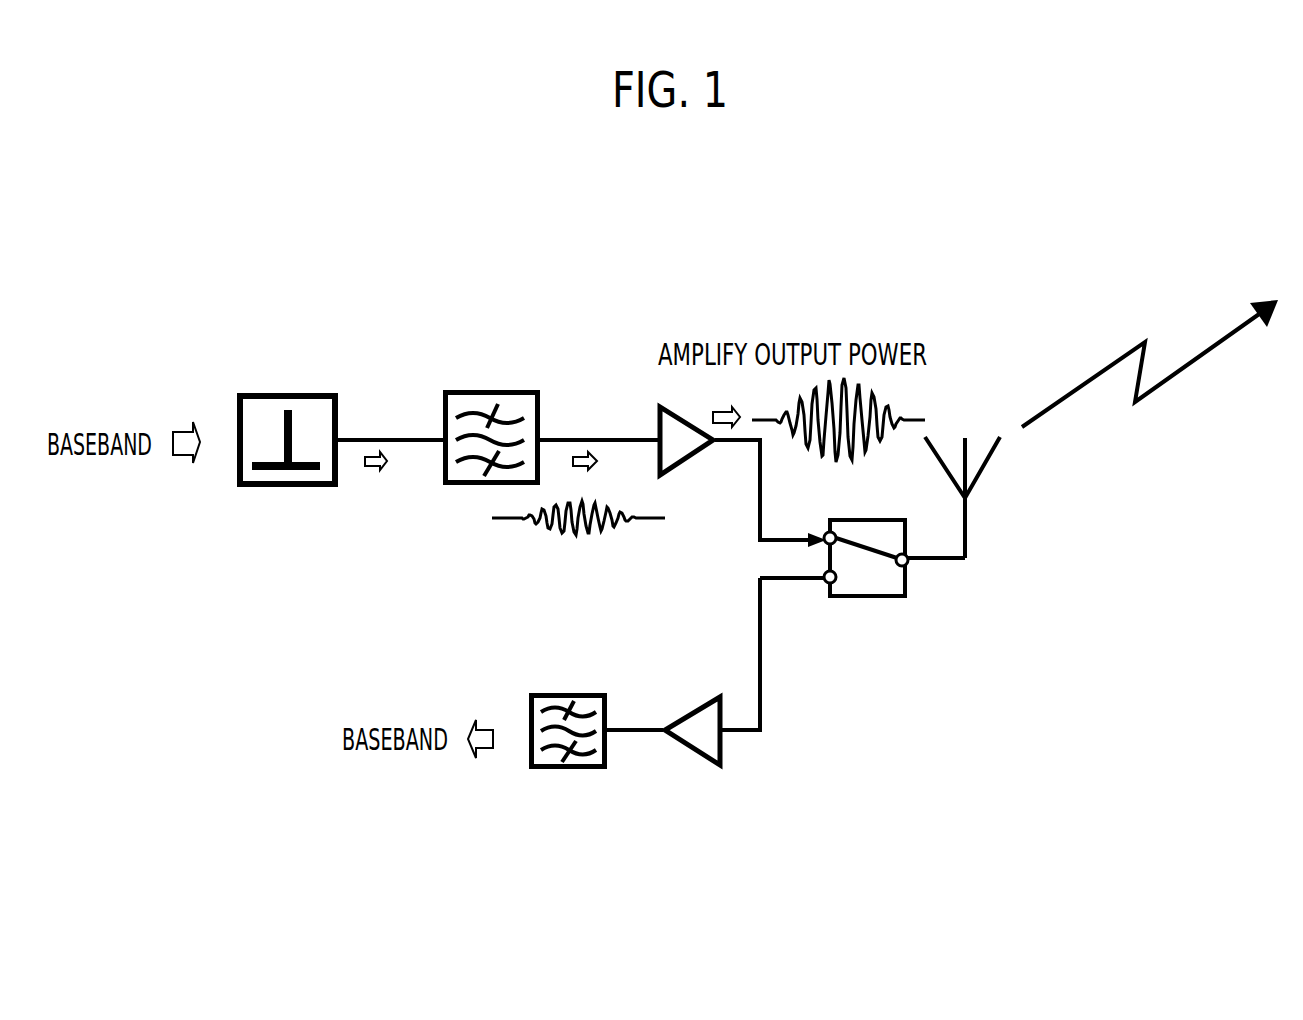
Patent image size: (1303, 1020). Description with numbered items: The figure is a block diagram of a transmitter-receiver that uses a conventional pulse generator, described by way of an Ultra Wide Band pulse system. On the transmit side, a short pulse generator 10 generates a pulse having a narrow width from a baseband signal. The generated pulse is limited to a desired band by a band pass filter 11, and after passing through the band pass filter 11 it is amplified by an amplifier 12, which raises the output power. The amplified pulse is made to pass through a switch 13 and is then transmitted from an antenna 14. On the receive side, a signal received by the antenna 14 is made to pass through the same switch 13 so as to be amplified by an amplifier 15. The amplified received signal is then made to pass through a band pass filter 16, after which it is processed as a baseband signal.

The short pulse generator 10 is at (288, 393).
The band pass filter 11 is at (488, 390).
The amplifier 12 is at (684, 461).
The switch 13 is at (878, 599).
The antenna 14 is at (968, 521).
The amplifier 15 is at (693, 750).
The band pass filter 16 is at (575, 771).